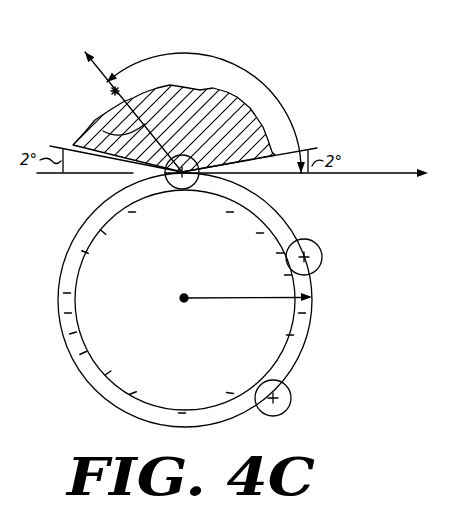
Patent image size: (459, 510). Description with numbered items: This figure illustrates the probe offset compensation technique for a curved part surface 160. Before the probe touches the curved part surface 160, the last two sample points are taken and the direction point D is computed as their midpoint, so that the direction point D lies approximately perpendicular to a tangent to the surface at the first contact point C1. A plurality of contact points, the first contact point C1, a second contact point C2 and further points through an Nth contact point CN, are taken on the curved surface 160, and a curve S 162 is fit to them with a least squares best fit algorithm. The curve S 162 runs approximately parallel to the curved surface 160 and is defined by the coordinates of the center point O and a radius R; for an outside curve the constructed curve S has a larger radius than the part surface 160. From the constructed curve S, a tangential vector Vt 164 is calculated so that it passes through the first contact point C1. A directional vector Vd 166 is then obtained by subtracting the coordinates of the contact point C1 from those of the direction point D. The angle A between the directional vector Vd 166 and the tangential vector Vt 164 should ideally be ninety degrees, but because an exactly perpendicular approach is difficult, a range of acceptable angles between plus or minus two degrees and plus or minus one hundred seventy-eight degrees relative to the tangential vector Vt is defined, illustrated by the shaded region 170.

The curved part surface 160 is at (88, 248).
The curve S 162 is at (285, 214).
The tangential vector Vt 164 is at (373, 172).
The directional vector Vd 166 is at (103, 131).
The shaded region 170 is at (249, 95).
The angle A is at (212, 54).
The first contact point C1 is at (186, 162).
The second contact point C2 is at (318, 257).
The Nth contact point CN is at (287, 398).
The direction point D is at (108, 92).
The center point O is at (184, 295).
The radius R is at (255, 297).
The curve S is at (305, 342).
The directional vector Vd is at (91, 63).
The tangential vector Vt is at (403, 172).